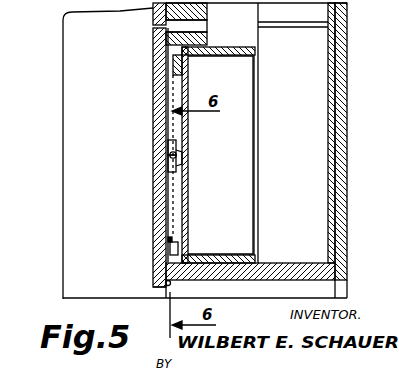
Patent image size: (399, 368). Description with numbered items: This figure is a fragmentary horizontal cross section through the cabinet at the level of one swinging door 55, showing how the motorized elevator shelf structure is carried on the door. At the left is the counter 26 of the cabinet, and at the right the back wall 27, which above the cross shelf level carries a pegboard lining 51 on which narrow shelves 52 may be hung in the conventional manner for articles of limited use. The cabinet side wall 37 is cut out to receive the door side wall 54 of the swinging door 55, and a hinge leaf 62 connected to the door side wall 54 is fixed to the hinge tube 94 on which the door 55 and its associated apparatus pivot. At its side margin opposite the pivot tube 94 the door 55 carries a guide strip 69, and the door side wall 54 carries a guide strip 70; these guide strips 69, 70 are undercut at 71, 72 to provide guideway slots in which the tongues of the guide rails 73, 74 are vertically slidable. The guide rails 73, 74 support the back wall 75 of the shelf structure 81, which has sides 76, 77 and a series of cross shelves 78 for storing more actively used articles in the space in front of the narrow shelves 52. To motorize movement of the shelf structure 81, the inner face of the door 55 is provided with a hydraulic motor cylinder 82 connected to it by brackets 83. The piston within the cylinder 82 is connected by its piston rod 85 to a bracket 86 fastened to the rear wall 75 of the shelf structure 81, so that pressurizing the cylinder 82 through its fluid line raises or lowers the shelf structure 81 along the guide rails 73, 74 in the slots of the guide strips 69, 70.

The counter 26 is at (76, 105).
The back wall 27 is at (340, 119).
The side wall 37 is at (311, 262).
The pegboard lining 51 is at (332, 161).
The narrow shelf 52 is at (310, 124).
The door side wall 54 is at (212, 271).
The swinging door 55 is at (158, 177).
The hinge leaf 62 is at (172, 283).
The guide strip 69 is at (205, 24).
The guide strip 70 is at (168, 262).
The undercut 71 is at (166, 49).
The undercut 72 is at (170, 247).
The guide rail 73 is at (175, 68).
The guide rail 74 is at (170, 240).
The back wall of shelf structure 75 is at (187, 211).
The side of shelf structure 76 is at (255, 51).
The side of shelf structure 77 is at (251, 262).
The cross shelf 78 is at (248, 197).
The shelf structure 81 is at (250, 215).
The hydraulic motor cylinder 82 is at (168, 156).
The bracket 83 is at (168, 143).
The piston rod 85 is at (177, 152).
The bracket 86 is at (178, 163).
The hinge tube 94 is at (166, 284).